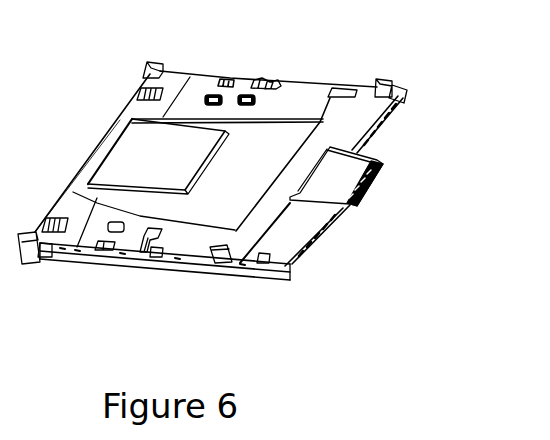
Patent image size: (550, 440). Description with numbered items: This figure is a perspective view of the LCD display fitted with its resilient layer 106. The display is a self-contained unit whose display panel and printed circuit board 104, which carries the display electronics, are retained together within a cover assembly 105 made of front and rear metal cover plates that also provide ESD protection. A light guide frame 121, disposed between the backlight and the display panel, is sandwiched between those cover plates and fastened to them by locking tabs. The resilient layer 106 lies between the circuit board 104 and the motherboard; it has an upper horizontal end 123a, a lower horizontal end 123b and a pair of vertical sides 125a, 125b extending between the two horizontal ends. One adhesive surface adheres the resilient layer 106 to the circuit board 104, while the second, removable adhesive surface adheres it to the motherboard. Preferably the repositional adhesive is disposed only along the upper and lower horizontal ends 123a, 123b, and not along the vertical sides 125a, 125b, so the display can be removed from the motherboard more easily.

The resilient layer 106 is at (114, 148).
The vertical side 125b is at (241, 80).
The lower horizontal end 123b is at (309, 144).
The printed circuit board 104 is at (266, 183).
The upper horizontal end 123a is at (73, 190).
The vertical side 125a is at (180, 236).
The light guide frame 121 is at (105, 256).
The cover assembly 105 is at (173, 272).